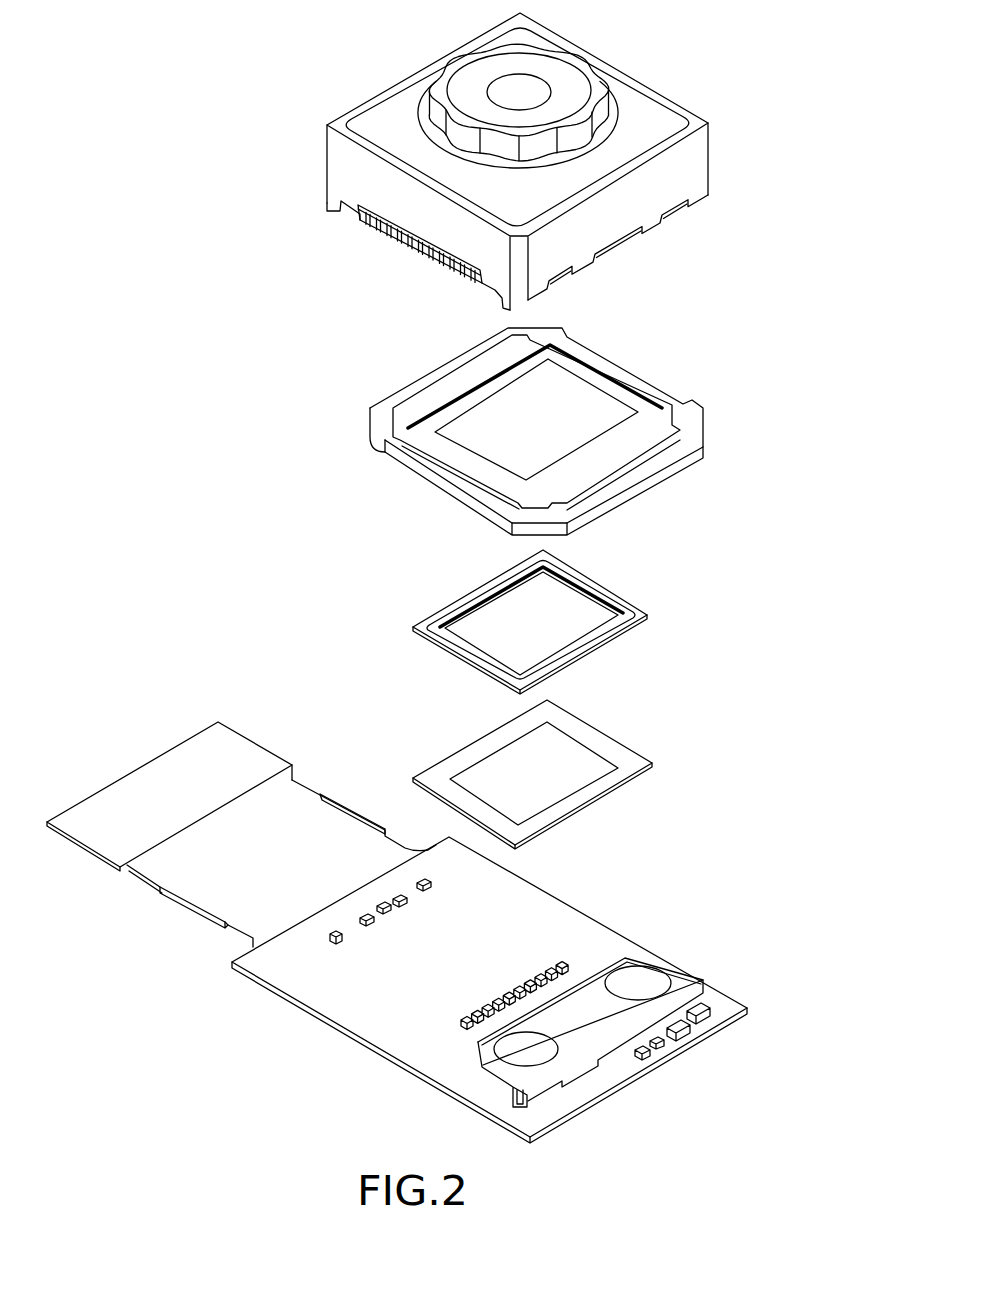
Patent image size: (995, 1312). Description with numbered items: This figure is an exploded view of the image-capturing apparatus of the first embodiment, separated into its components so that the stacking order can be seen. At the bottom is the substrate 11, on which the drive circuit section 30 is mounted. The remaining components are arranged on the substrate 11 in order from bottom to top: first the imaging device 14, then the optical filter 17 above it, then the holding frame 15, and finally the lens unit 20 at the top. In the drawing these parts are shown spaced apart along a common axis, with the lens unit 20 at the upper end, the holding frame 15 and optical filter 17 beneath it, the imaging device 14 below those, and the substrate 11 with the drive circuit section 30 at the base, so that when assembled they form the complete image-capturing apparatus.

The lens unit 20 is at (653, 89).
The holding frame 15 is at (667, 396).
The optical filter 17 is at (613, 590).
The imaging device 14 is at (620, 743).
The substrate 11 is at (612, 930).
The drive circuit section 30 is at (696, 958).